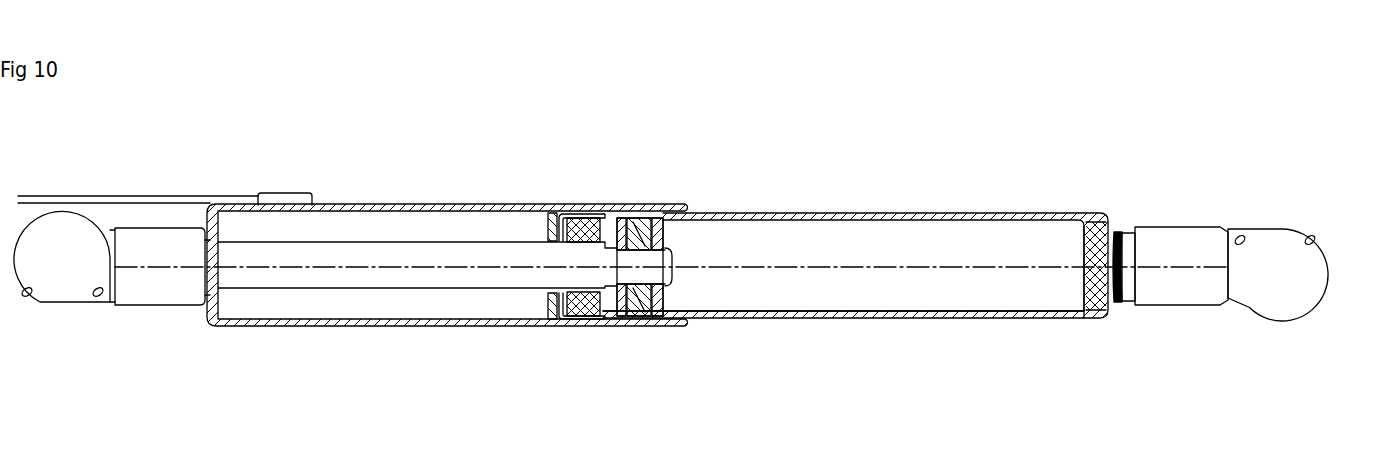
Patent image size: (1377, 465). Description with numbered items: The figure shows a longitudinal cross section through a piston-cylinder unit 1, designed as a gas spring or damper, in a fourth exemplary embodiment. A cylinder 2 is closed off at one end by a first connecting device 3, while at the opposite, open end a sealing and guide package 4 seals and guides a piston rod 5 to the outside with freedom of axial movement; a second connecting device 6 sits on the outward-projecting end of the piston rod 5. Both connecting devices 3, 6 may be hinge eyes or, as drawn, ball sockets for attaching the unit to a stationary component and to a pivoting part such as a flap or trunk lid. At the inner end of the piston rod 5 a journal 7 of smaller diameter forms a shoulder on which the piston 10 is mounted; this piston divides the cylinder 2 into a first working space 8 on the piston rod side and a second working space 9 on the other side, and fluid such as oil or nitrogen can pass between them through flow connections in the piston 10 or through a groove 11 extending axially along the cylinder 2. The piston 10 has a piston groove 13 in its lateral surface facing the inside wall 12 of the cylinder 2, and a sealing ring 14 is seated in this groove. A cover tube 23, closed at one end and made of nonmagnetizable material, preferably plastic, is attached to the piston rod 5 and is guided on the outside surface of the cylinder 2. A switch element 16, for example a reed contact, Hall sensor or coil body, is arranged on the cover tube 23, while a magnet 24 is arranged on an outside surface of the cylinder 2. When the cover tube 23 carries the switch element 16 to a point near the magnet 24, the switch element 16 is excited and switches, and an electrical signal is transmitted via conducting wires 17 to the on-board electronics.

The piston-cylinder unit 1 is at (1273, 85).
The cylinder 2 is at (1029, 313).
The first connecting device 3 is at (1281, 268).
The sealing and guide package 4 is at (582, 300).
The piston rod 5 is at (333, 276).
The second connecting device 6 is at (68, 264).
The journal 7 is at (630, 295).
The first working space 8 is at (608, 232).
The second working space 9 is at (1018, 236).
The piston 10 is at (658, 298).
The groove 11 is at (1001, 313).
The inside wall 12 is at (890, 222).
The piston groove 13 is at (636, 221).
The sealing ring 14 is at (643, 222).
The switch element 16 is at (295, 199).
The conducting wires 17 is at (152, 201).
The cover tube 23 is at (500, 207).
The magnet 24 is at (553, 296).